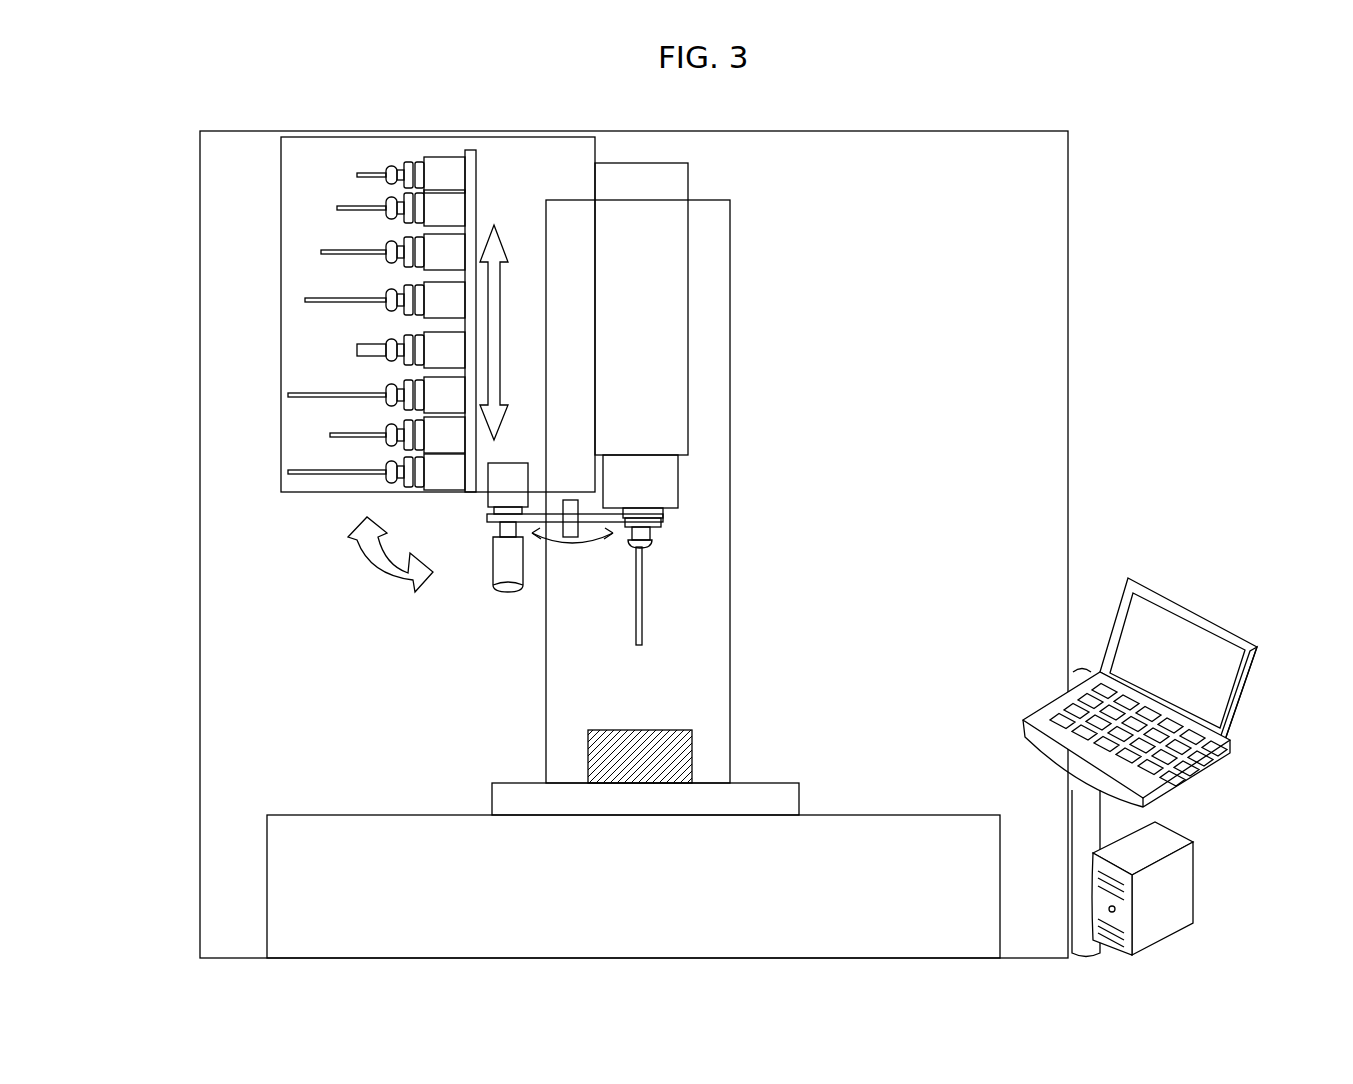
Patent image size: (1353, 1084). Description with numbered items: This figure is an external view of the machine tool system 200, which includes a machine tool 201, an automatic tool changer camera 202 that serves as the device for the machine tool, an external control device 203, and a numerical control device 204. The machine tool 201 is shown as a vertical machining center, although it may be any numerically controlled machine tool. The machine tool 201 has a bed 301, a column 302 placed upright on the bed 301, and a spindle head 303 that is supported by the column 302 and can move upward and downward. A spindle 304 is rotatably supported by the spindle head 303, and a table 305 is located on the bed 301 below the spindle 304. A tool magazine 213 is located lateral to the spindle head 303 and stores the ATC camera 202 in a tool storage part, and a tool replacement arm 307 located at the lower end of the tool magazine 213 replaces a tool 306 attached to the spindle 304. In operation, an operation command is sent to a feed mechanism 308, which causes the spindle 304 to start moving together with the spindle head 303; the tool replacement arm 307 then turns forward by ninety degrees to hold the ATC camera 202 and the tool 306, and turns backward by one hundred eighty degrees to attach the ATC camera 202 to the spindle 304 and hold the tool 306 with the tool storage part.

The machine tool system 200 is at (1241, 184).
The machine tool 201 is at (200, 210).
The automatic tool changer (ATC) camera 202 is at (500, 590).
The external control device 203 is at (1172, 833).
The numerical control (NC) device 204 is at (1192, 605).
The tool magazine 213 is at (290, 378).
The bed 301 is at (325, 833).
The column 302 is at (730, 620).
The spindle head 303 is at (683, 300).
The spindle 304 is at (670, 475).
The table 305 is at (795, 790).
The tool 306 is at (643, 590).
The tool replacement arm 307 is at (575, 547).
The feed mechanism 308 is at (476, 165).